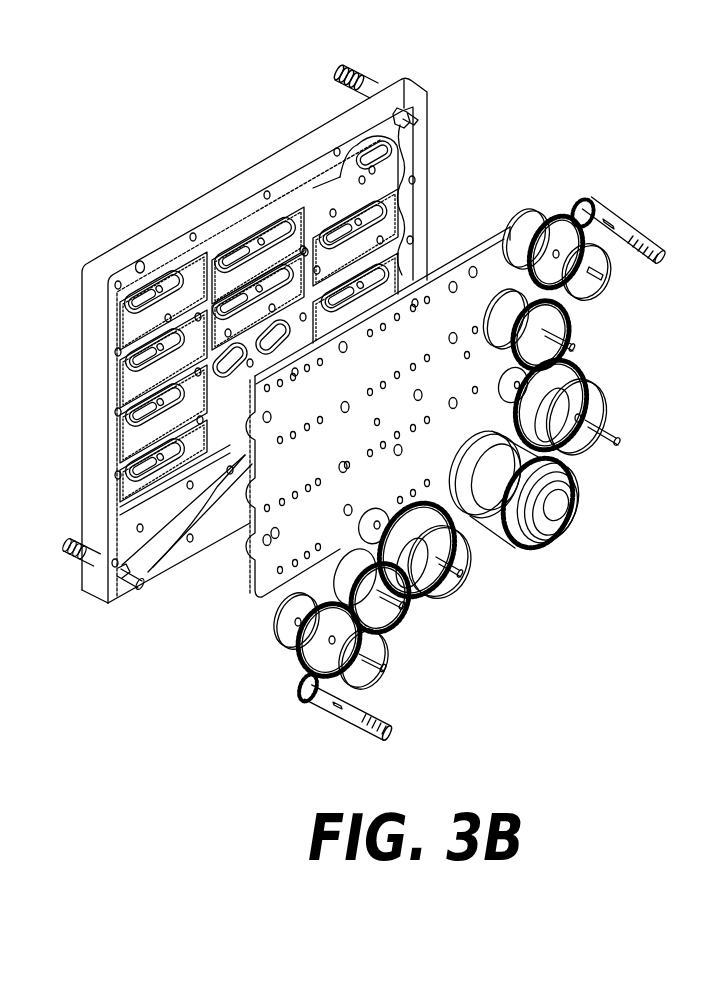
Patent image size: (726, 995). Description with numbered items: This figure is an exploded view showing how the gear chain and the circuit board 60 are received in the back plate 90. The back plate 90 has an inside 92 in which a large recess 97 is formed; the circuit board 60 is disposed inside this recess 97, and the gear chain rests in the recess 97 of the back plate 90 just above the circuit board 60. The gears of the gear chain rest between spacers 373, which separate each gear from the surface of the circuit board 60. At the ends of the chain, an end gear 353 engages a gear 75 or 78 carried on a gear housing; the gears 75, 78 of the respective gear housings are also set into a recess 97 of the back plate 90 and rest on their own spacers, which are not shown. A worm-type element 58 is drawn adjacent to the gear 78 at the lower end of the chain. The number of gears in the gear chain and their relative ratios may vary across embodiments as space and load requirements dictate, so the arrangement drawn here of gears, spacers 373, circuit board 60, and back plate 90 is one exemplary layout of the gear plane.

The back plate 90 is at (148, 240).
The inside of back plate 92 is at (233, 222).
The recess 97 is at (387, 130).
The circuit board 60 is at (248, 527).
The spacers 373 is at (530, 232).
The end gear 353 is at (558, 238).
The gear 75 is at (592, 214).
The worm gear 58 is at (299, 688).
The gear 78 is at (306, 702).